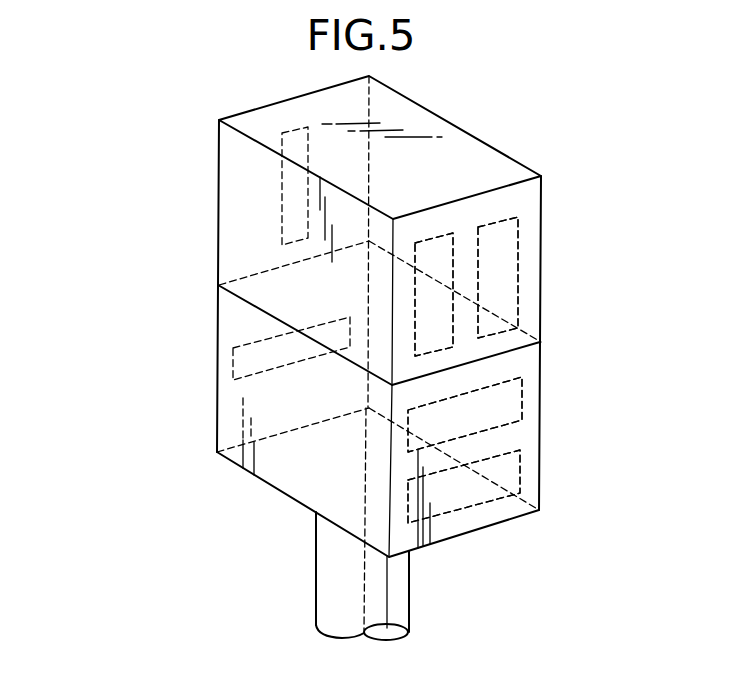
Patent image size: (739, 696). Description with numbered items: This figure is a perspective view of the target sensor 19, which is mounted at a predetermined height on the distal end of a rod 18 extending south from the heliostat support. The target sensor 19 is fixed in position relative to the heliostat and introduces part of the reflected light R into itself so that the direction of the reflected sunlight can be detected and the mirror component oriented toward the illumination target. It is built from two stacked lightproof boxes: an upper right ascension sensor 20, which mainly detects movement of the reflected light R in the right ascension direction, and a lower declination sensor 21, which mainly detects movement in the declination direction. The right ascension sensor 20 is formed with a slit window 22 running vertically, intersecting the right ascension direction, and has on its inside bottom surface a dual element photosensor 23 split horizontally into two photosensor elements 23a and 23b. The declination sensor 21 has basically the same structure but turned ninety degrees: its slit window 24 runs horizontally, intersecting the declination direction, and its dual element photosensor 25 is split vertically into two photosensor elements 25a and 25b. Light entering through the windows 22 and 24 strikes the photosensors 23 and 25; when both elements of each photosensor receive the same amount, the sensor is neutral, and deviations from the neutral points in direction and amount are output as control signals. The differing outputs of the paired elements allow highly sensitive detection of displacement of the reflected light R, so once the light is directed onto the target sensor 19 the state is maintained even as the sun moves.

The rod 18 is at (348, 565).
The target sensor 19 is at (678, 265).
The right ascension sensor 20 is at (541, 278).
The declination sensor 21 is at (541, 425).
The slit window 22 is at (282, 218).
The dual element photosensor 23 is at (478, 101).
The photosensor element 23a is at (440, 236).
The photosensor element 23b is at (500, 222).
The slit window 24 is at (275, 369).
The dual element photosensor 25 is at (565, 608).
The photosensor element 25a is at (541, 438).
The photosensor element 25b is at (529, 503).
The reflected light R is at (540, 342).